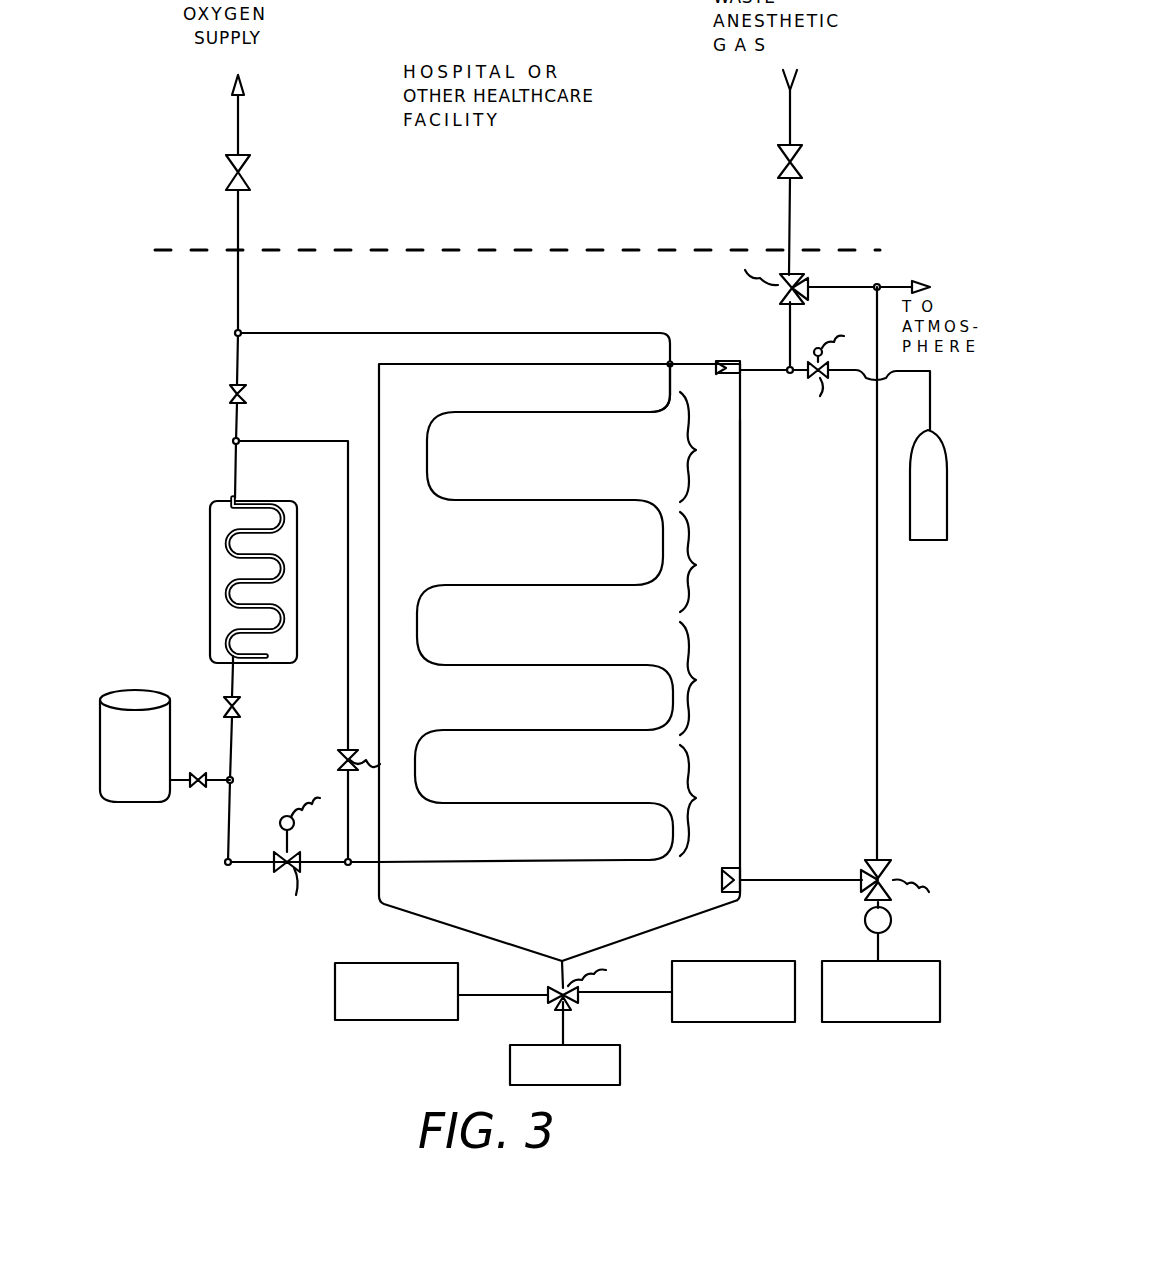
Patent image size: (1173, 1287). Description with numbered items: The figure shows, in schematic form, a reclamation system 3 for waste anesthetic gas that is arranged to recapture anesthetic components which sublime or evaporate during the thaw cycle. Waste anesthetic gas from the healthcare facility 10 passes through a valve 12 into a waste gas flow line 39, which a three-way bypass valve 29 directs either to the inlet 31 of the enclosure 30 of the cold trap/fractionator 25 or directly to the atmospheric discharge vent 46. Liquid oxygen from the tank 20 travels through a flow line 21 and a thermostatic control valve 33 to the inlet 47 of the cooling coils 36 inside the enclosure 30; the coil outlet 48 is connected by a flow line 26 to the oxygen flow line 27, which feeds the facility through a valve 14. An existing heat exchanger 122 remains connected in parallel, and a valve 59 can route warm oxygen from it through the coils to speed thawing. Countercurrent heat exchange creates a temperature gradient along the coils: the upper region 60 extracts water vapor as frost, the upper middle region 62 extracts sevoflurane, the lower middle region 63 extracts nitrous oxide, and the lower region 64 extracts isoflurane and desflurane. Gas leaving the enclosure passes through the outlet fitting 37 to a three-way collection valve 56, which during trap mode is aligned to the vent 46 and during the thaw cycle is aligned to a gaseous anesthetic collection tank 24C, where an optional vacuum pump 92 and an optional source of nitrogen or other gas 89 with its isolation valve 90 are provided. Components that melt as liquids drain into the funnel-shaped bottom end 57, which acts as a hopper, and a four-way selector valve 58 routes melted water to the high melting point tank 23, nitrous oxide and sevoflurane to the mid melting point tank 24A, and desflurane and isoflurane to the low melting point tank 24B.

The reclamation system 3 is at (232, 968).
The healthcare facility 10 is at (503, 210).
The valve 12 is at (804, 165).
The valve 14 is at (252, 173).
The tank 20 is at (130, 806).
The flow line 21 is at (226, 836).
The drain tank 23 is at (622, 1075).
The collection tank 24A is at (365, 1022).
The collection tank 24B is at (752, 1024).
The gaseous anesthetic collection tank 24C is at (870, 1024).
The cold trap/fractionator 25 is at (746, 631).
The flow line 26 is at (360, 337).
The flow line 27 is at (240, 230).
The 3-way bypass valve 29 is at (785, 290).
The enclosure 30 is at (742, 466).
The inlet 31 is at (712, 378).
The thermostatic control valve 33 is at (298, 859).
The cooling coils 36 is at (447, 668).
The outlet fitting 37 is at (744, 870).
The waste gas flow line 39 is at (793, 224).
The atmospheric discharge vent 46 is at (893, 276).
The inlet 47 is at (385, 860).
The outlet 48 is at (665, 364).
The 3-way collection valve 56 is at (891, 858).
The bottom end 57 is at (596, 940).
The 4-way selector valve 58 is at (552, 1000).
The valve 59 is at (335, 758).
The upper region 60 is at (703, 447).
The upper middle region 62 is at (702, 562).
The lower middle region 63 is at (704, 678).
The lower region 64 is at (703, 800).
The source of nitrogen or other gas 89 is at (936, 543).
The isolation valve 90 is at (835, 383).
The vacuum pump 92 is at (892, 918).
The heat exchanger 122 is at (209, 546).